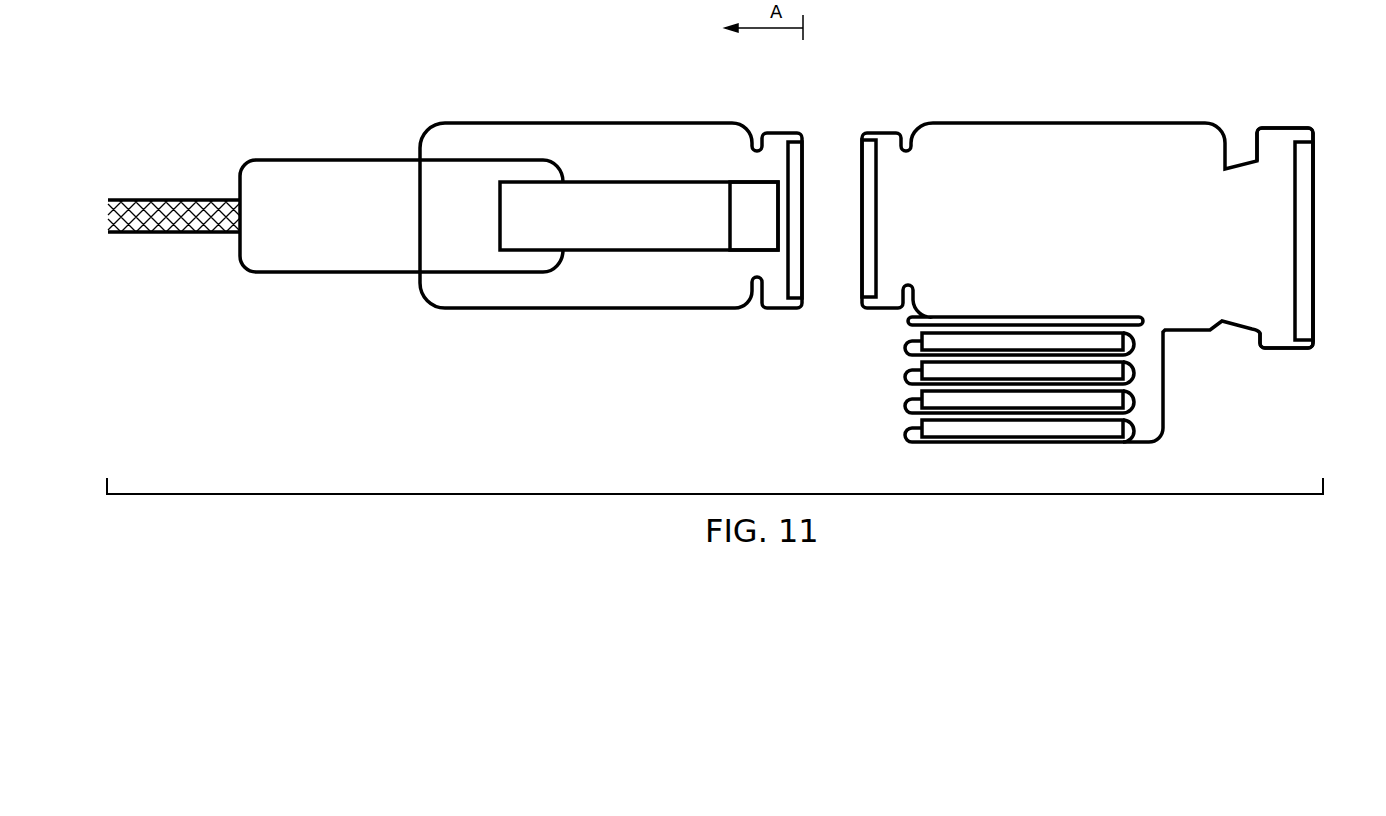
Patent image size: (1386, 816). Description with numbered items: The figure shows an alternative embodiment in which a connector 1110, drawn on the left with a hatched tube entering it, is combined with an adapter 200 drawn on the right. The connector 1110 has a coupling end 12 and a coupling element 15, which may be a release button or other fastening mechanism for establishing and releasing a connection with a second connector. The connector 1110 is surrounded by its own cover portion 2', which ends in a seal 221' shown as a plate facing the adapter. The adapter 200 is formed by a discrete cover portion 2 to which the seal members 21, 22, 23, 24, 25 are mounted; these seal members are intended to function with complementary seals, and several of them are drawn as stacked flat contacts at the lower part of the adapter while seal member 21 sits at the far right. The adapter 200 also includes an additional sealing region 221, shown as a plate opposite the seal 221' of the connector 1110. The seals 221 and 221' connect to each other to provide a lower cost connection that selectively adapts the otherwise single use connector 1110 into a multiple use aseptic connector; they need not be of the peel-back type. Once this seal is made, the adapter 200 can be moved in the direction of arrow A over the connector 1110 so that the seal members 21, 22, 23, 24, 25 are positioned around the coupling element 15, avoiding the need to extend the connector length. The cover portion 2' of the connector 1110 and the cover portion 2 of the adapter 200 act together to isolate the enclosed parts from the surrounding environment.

The cover portion 2 is at (611, 185).
The cover portion 2' is at (1087, 252).
The coupling end 12 is at (692, 228).
The coupling element 15 is at (757, 228).
The seal member 21 is at (1313, 202).
The seal member 22 is at (912, 428).
The seal member 23 is at (915, 397).
The seal member 24 is at (918, 365).
The seal member 25 is at (920, 333).
The adapter 200 is at (1245, 350).
The sealing region 221 is at (863, 168).
The seal 221' is at (807, 185).
The connector 1110 is at (482, 313).